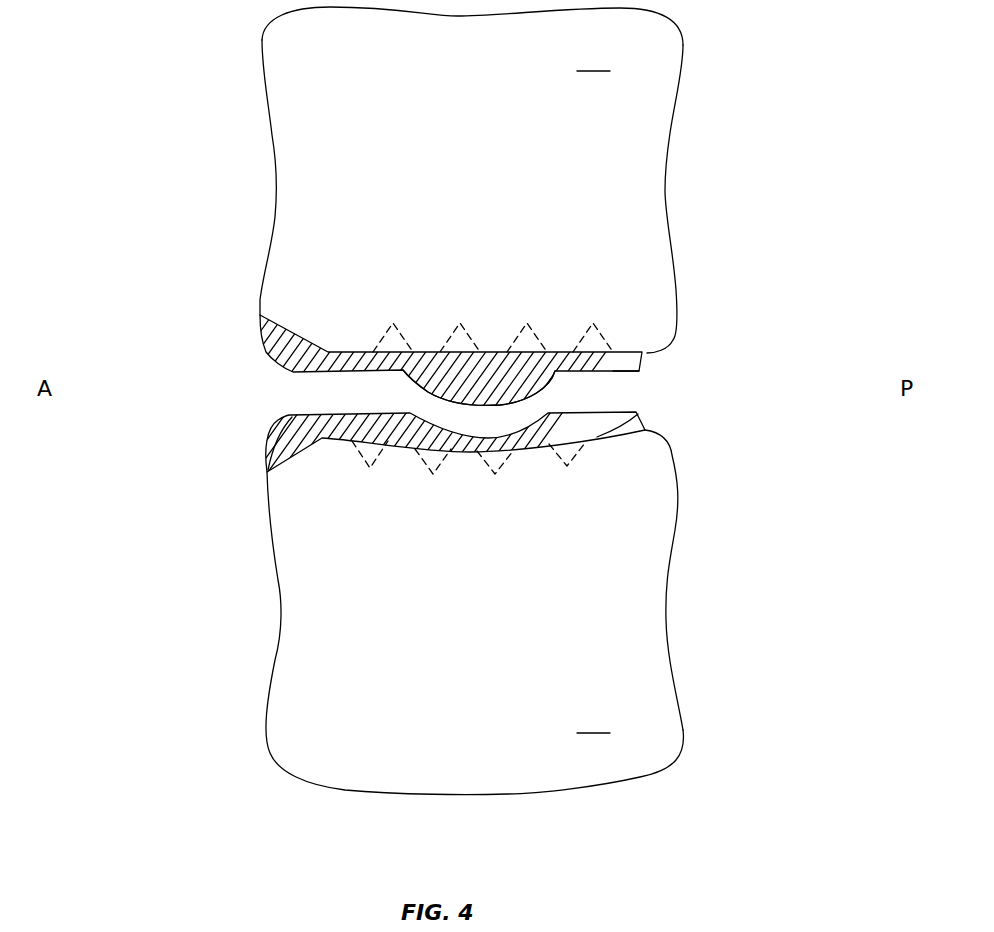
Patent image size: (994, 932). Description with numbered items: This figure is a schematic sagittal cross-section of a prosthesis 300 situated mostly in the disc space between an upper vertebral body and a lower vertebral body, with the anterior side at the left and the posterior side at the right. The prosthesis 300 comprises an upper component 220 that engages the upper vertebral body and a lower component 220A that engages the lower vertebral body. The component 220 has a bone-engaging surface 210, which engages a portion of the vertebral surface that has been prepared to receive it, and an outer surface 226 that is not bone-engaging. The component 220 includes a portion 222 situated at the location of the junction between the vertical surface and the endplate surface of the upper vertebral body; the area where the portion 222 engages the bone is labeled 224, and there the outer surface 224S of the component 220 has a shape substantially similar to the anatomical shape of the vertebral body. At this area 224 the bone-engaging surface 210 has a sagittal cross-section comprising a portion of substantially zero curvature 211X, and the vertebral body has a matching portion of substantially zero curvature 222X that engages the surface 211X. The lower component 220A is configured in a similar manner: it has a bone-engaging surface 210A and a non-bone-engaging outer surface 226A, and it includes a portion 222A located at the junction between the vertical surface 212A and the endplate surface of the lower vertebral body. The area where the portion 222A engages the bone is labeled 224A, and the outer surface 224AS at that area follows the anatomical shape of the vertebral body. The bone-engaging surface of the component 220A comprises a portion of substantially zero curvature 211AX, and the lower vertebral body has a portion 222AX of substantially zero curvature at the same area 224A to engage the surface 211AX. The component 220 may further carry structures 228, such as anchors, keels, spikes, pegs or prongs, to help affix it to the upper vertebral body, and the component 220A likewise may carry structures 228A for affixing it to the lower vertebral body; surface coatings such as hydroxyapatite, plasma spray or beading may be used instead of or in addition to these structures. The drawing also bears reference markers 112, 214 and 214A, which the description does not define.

The upper vertebra 112 is at (473, 180).
The bone-engaging surface 210 is at (452, 330).
The portion of substantially zero curvature 211X is at (291, 332).
The area of junction 224 is at (247, 331).
The outer surface at area 224 224S is at (260, 347).
The portion of component 220 222 is at (270, 358).
The portion of substantially zero curvature of vertebral body 222X is at (286, 366).
The portion of component 220A 222A is at (282, 430).
The area of junction 224A is at (259, 450).
The outer surface at area 224A 224AS is at (268, 471).
The portion of substantially zero curvature 211AX is at (318, 396).
The vertical surface 212A is at (475, 612).
The upper vertebra posterior side 214 is at (668, 158).
The structures 228 is at (525, 328).
The component 220 is at (667, 353).
The outer surface 226 is at (642, 372).
The prosthesis 300 is at (665, 385).
The outer surface 226A is at (610, 413).
The component 220A is at (652, 421).
The bone-engaging surface 210A is at (450, 443).
The structures 228A is at (548, 446).
The lower vertebra posterior side 214A is at (670, 563).
The portion of substantially zero curvature of vertebral body 222AX is at (300, 418).